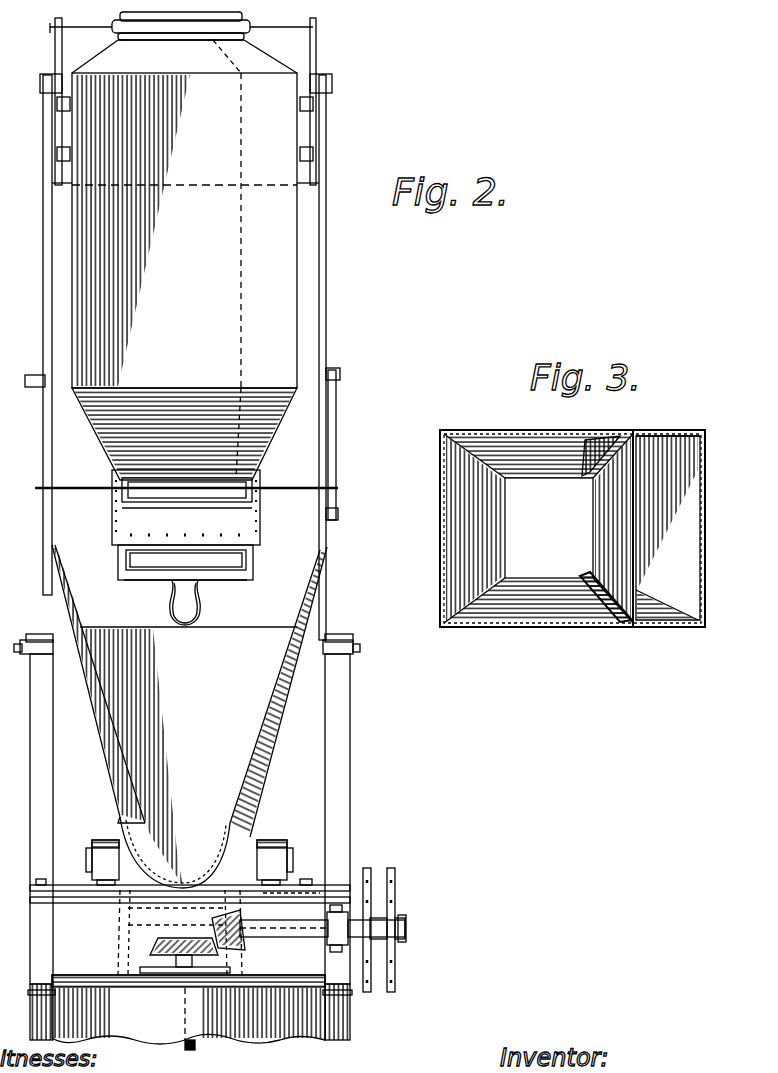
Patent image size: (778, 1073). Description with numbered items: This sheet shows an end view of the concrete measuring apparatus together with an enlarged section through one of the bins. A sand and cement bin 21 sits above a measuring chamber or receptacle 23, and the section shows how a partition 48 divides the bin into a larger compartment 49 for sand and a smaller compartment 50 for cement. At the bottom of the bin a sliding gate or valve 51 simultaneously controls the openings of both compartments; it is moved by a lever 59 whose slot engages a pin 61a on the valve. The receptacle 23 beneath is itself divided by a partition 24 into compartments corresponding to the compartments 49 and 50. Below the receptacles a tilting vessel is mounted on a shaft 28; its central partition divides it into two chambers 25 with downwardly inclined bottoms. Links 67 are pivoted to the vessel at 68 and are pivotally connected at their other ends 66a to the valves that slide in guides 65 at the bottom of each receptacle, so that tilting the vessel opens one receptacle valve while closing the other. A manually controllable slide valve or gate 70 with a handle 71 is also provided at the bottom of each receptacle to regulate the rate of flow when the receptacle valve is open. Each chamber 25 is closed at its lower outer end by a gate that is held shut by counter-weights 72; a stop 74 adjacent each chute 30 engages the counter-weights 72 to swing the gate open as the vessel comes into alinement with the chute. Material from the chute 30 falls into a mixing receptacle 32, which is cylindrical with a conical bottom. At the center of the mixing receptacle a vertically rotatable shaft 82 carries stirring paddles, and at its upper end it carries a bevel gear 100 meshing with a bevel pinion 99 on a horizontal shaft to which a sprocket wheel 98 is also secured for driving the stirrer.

In FIG. 3, the sand and cement bin 21 is at (572, 545).
In FIG. 2, the measuring chamber or receptacle 23 is at (184, 230).
In FIG. 2, the partition 24 is at (241, 242).
In FIG. 2, the chamber of tilting vessel 25 is at (189, 715).
In FIG. 2, the shaft 28 is at (355, 668).
In FIG. 2, the chute 30 is at (222, 866).
In FIG. 2, the mixing receptacle 32 is at (350, 1021).
In FIG. 3, the partition 48 is at (636, 524).
In FIG. 3, the compartment 49 is at (538, 528).
In FIG. 3, the compartment 50 is at (668, 528).
In FIG. 2, the gate or valve 51 is at (184, 56).
In FIG. 2, the lever 59 is at (326, 64).
In FIG. 2, the pin 61a is at (316, 27).
In FIG. 2, the guide 65 is at (248, 522).
In FIG. 2, the pivotal connection end of link 66a is at (286, 488).
In FIG. 2, the link 67 is at (336, 448).
In FIG. 2, the pivot 68 is at (340, 374).
In FIG. 2, the slide valve or gate 70 is at (138, 580).
In FIG. 2, the handle 71 is at (198, 603).
In FIG. 2, the counter-weight 72 is at (104, 840).
In FIG. 2, the stop 74 is at (282, 887).
In FIG. 2, the vertically rotatable shaft 82 is at (188, 1012).
In FIG. 2, the sprocket wheel 98 is at (391, 868).
In FIG. 2, the bevel pinion 99 is at (245, 942).
In FIG. 2, the bevel gear 100 is at (150, 946).